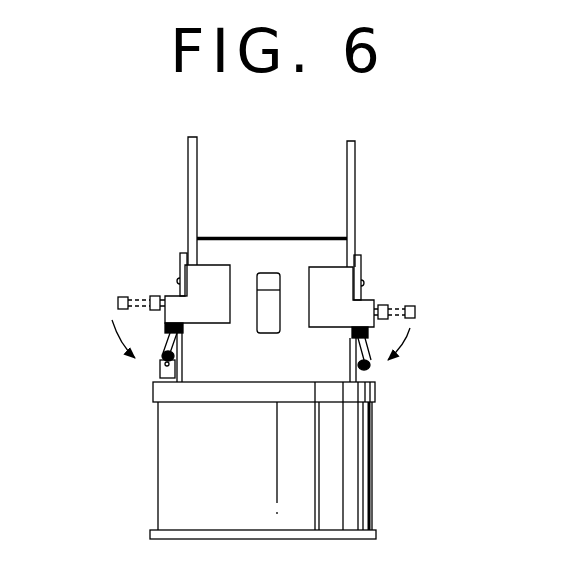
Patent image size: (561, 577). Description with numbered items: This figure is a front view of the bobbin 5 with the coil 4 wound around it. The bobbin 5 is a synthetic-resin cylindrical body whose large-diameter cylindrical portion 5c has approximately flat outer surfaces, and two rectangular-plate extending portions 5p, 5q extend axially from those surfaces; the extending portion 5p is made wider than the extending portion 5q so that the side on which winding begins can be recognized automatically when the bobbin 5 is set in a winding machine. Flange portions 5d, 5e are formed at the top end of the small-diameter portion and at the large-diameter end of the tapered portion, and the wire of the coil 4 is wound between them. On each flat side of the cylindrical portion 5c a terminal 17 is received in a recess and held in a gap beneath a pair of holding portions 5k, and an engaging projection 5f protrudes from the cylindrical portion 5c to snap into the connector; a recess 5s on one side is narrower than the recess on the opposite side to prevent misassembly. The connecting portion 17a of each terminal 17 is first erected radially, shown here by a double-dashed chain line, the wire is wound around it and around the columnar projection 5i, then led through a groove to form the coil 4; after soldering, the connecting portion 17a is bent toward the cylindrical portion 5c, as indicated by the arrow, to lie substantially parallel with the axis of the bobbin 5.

The coil 4 is at (157, 470).
The bobbin 5 is at (258, 202).
The extending portion 5p is at (188, 158).
The extending portion 5q is at (356, 168).
The recess 5s is at (233, 278).
The engaging projection 5f is at (270, 283).
The holding portion 5k is at (181, 296).
The terminal 17 is at (364, 265).
The connecting portion 17a is at (150, 298).
The columnar projection 5i is at (158, 366).
The flange portion 5e is at (378, 402).
The large-diameter cylindrical portion 5c is at (313, 370).
The flange portion 5d is at (376, 535).